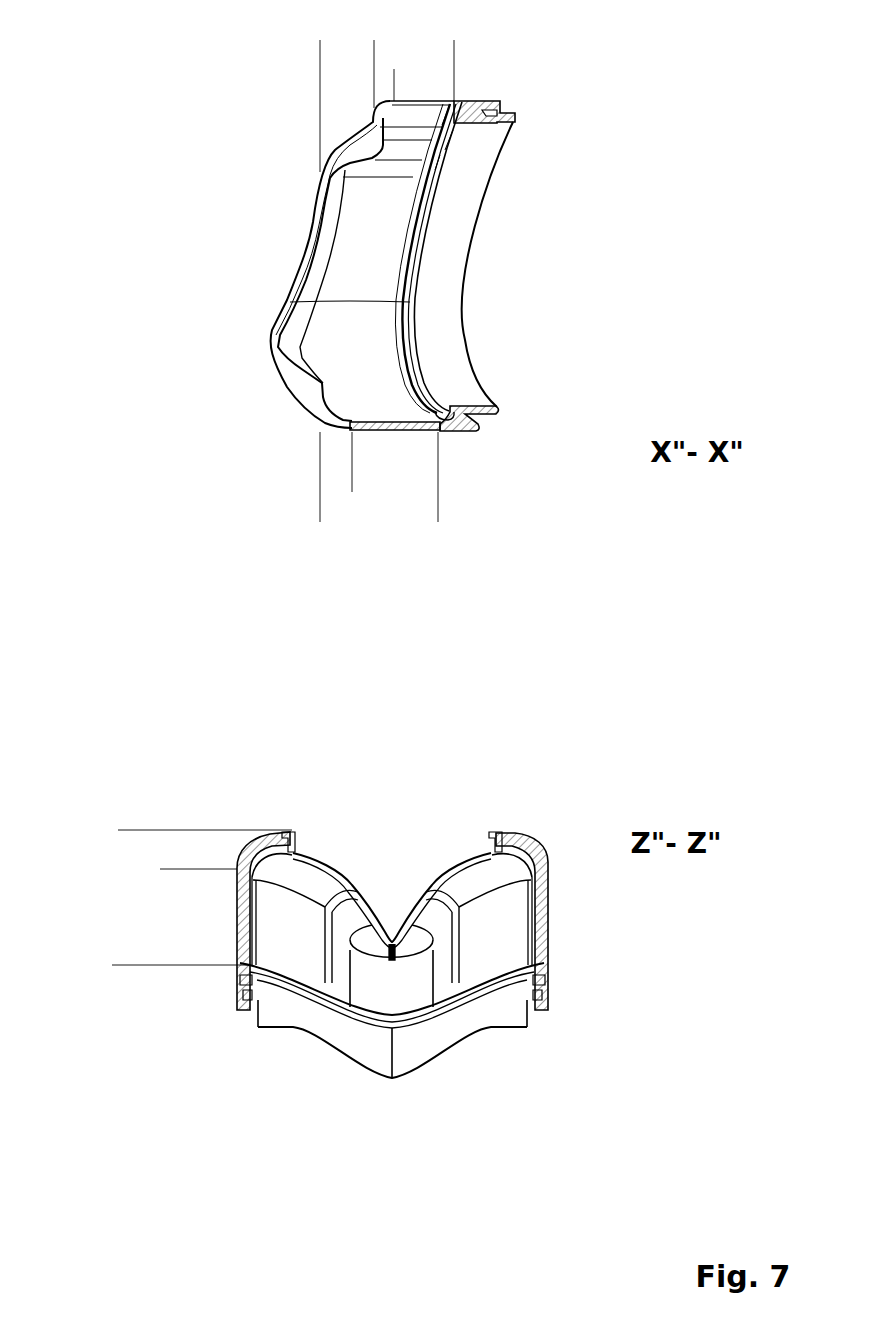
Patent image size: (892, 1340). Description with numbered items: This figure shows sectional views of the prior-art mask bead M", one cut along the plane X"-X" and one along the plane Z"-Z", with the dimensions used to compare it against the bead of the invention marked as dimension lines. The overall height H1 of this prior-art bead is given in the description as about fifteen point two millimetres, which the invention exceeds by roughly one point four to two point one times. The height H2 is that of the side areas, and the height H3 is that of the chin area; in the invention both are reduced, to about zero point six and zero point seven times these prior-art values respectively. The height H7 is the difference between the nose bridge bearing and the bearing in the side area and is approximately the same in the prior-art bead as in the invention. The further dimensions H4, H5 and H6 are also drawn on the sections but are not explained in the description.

The height H1 is at (374, 40).
The height of the side areas H2 is at (123, 830).
The height of the chin area H3 is at (320, 514).
The dimension H4 (rim width) H4 is at (394, 69).
The dimension H5 (height) H5 is at (166, 965).
The dimension H6 (bottom width) H6 is at (352, 484).
The height difference between nose bridge bearing and side area bearing H7 is at (320, 40).